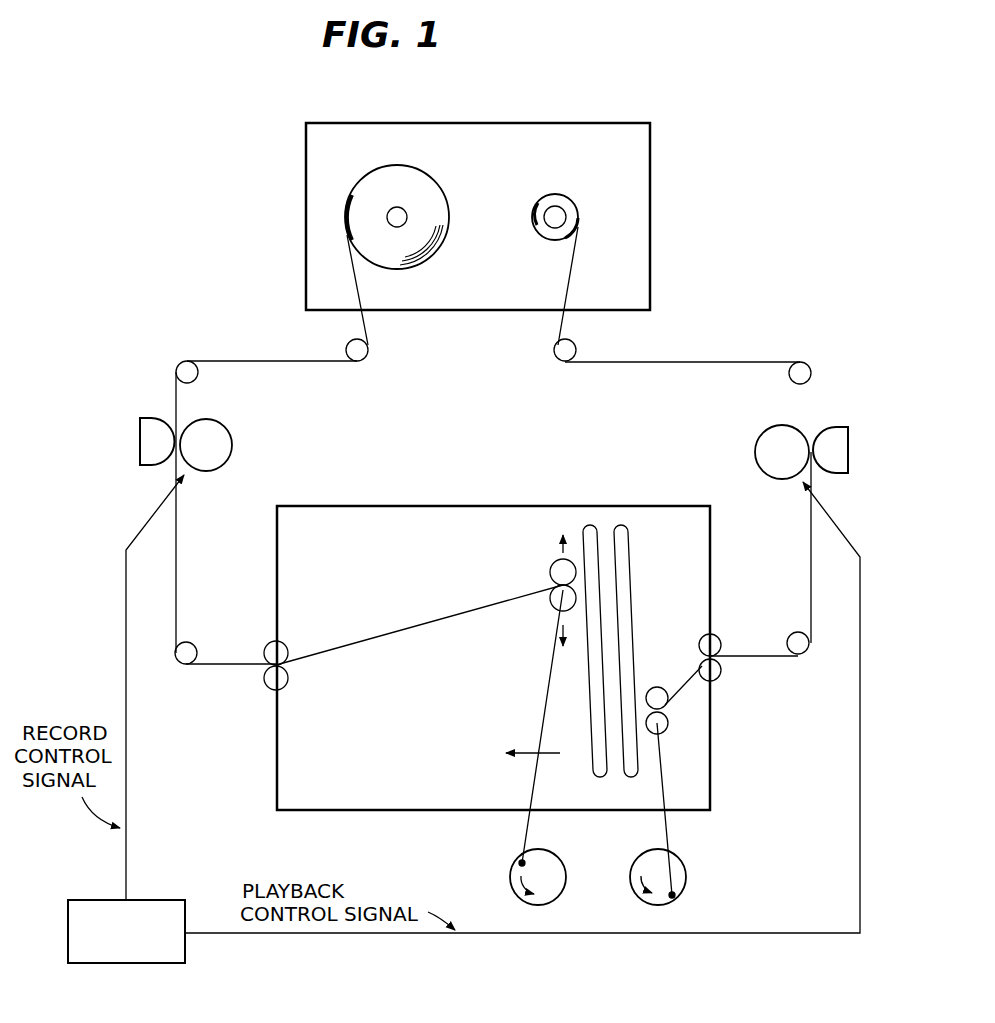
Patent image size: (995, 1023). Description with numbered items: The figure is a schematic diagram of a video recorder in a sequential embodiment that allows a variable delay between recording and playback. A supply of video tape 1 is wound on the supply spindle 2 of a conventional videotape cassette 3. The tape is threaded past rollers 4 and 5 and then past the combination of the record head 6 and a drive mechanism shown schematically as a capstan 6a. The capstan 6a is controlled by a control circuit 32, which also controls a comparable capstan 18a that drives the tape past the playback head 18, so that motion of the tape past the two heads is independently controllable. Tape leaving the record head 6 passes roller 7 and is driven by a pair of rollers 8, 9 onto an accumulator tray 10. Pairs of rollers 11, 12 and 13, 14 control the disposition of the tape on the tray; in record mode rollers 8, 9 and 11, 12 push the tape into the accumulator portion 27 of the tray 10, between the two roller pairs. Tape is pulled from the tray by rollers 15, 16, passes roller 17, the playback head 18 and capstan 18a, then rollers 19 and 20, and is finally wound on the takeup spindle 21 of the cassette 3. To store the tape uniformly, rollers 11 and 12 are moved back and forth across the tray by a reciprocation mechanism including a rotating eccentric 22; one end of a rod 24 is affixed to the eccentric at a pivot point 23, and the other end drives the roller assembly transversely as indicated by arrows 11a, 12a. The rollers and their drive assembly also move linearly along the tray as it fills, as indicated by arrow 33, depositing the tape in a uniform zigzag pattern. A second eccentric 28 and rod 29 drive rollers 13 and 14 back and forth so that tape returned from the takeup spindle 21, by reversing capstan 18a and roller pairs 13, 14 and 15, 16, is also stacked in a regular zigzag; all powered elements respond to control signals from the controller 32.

The video tape 1 is at (249, 360).
The supply spindle 2 is at (403, 213).
The videotape cassette 3 is at (515, 122).
The roller 4 is at (346, 347).
The roller 5 is at (196, 379).
The record head 6 is at (140, 438).
The capstan 6a is at (218, 438).
The roller 7 is at (191, 648).
The roller 8 is at (268, 646).
The roller 9 is at (286, 684).
The accumulator tray 10 is at (408, 505).
The roller 11 is at (550, 572).
The arrow 11a is at (555, 546).
The roller 12 is at (554, 604).
The arrow 12a is at (566, 628).
The roller 13 is at (658, 687).
The roller 14 is at (666, 731).
The roller 15 is at (720, 637).
The roller 16 is at (719, 676).
The roller 17 is at (799, 655).
The playback head 18 is at (838, 445).
The capstan 18a is at (754, 450).
The roller 19 is at (789, 379).
The roller 20 is at (576, 348).
The takeup spindle 21 is at (556, 220).
The rotating eccentric 22 is at (560, 858).
The pivot point 23 is at (515, 862).
The rod 24 is at (546, 668).
The accumulator portion 27 is at (606, 528).
The eccentric 28 is at (686, 873).
The rod 29 is at (683, 790).
The control circuit 32 is at (137, 942).
The arrow 33 is at (540, 752).